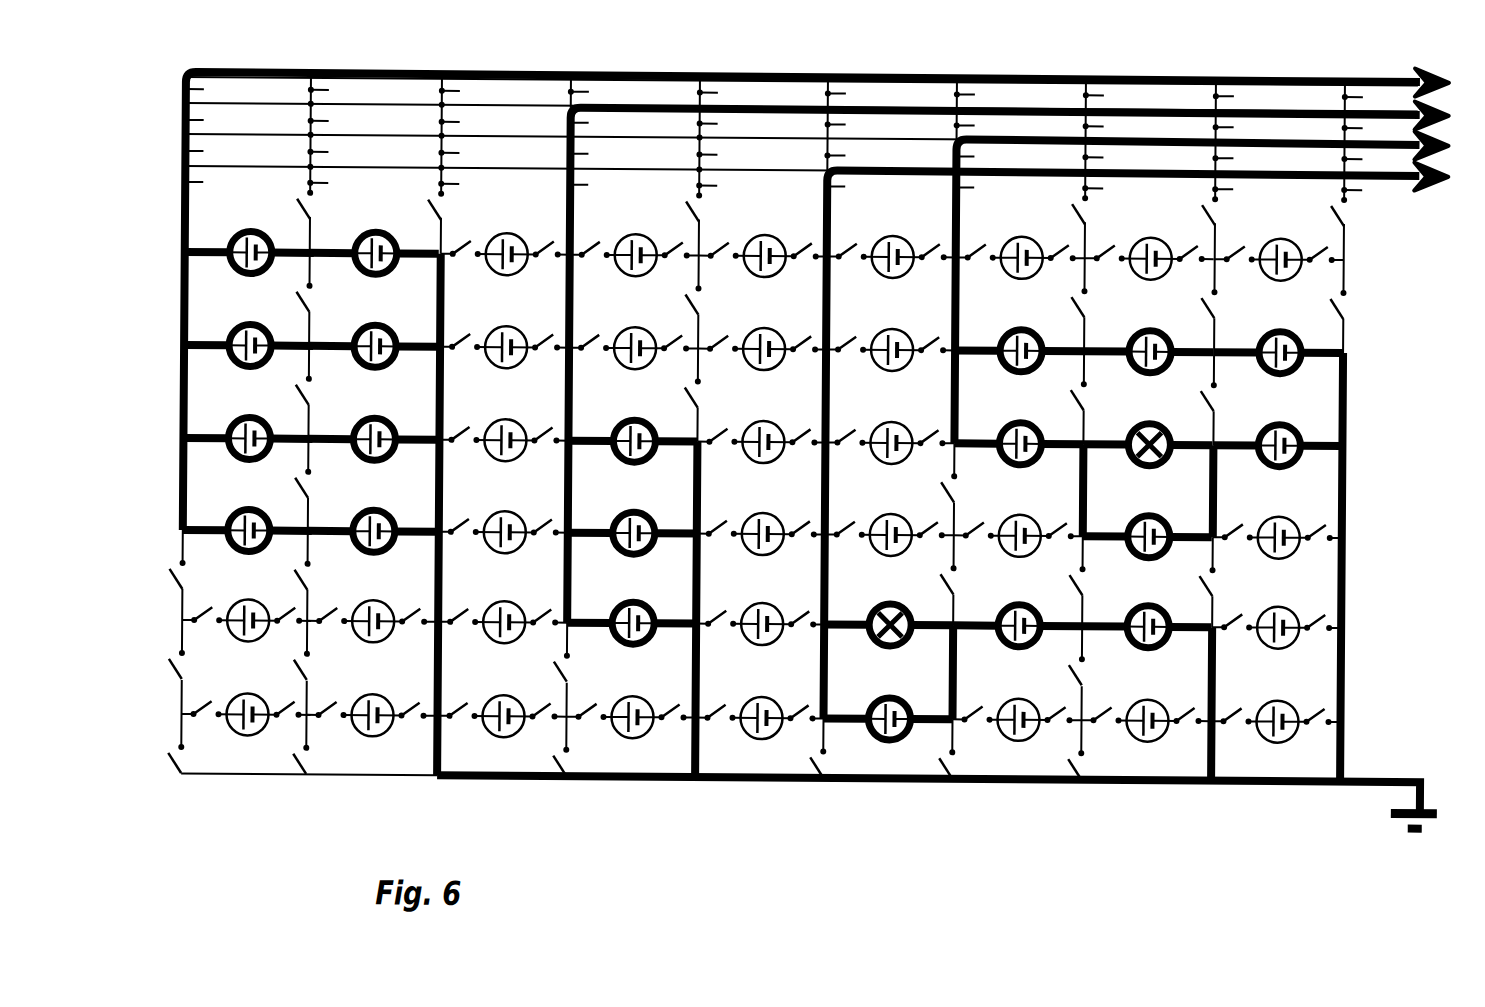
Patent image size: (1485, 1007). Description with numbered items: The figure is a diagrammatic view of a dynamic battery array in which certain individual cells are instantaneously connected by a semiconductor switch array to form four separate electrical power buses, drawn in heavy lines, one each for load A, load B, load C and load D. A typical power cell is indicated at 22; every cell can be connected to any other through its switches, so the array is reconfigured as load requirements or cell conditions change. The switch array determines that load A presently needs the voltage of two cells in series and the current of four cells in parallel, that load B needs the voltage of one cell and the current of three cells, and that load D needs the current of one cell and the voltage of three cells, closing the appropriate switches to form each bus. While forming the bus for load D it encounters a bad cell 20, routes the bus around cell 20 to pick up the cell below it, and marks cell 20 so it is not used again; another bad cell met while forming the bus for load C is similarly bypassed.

The bad cell 20 is at (917, 642).
The typical power cell 22 is at (656, 649).
The load A is at (834, 297).
The load B is at (1025, 361).
The load C is at (1218, 286).
The load D is at (1154, 439).